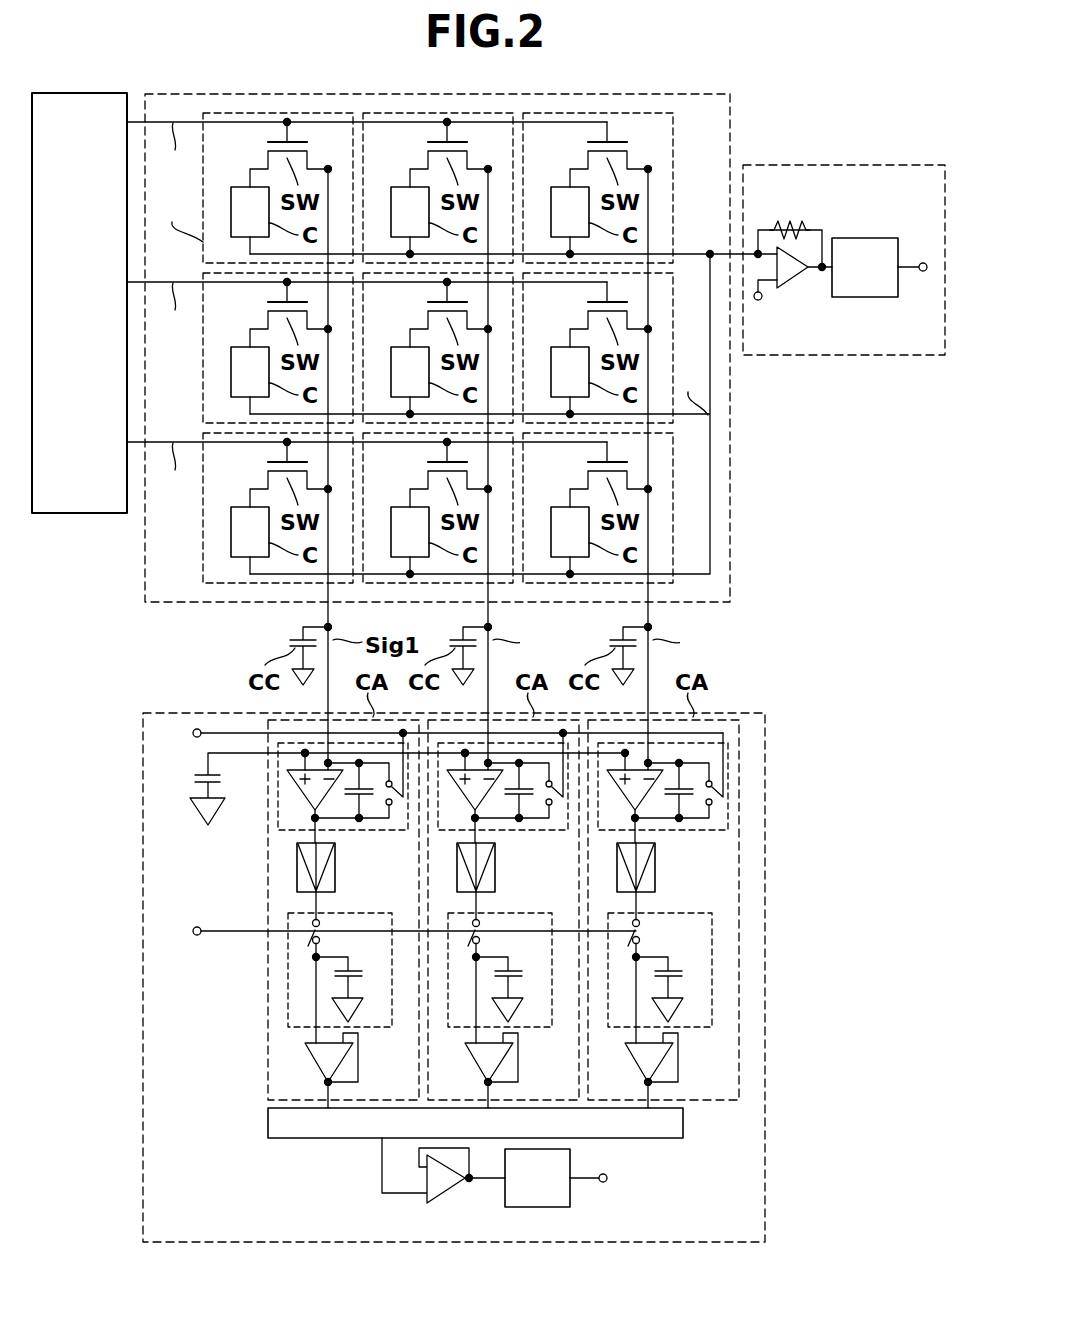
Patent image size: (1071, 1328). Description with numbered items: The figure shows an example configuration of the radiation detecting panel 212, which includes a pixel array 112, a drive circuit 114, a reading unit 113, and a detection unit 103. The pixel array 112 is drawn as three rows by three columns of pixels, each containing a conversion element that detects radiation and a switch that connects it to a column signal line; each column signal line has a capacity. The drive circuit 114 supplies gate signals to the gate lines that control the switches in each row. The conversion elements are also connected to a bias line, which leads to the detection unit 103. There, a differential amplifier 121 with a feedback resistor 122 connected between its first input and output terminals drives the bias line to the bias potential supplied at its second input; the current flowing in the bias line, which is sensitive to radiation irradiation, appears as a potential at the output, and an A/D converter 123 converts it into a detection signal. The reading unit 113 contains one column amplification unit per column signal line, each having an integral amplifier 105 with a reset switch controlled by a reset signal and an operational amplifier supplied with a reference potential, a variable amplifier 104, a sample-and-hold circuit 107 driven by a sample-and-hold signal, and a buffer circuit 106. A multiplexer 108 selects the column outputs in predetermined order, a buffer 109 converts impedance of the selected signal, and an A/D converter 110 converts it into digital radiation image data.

The drive circuit 114 is at (80, 93).
The pixel array 112 is at (640, 94).
The detection unit 103 is at (827, 287).
The feedback resistor 122 is at (787, 226).
The differential amplifier 121 is at (790, 285).
The A/D converter 123 is at (870, 238).
The reading unit 113 is at (454, 951).
The integral amplifier 105 is at (345, 832).
The variable amplifier 104 is at (335, 878).
The buffer circuit 106 is at (360, 1048).
The sample-and-hold circuit 107 is at (290, 1030).
The multiplexer 108 is at (687, 1122).
The buffer 109 is at (443, 1192).
The A/D converter 110 is at (570, 1195).
The radiation detecting panel 212 is at (402, 951).